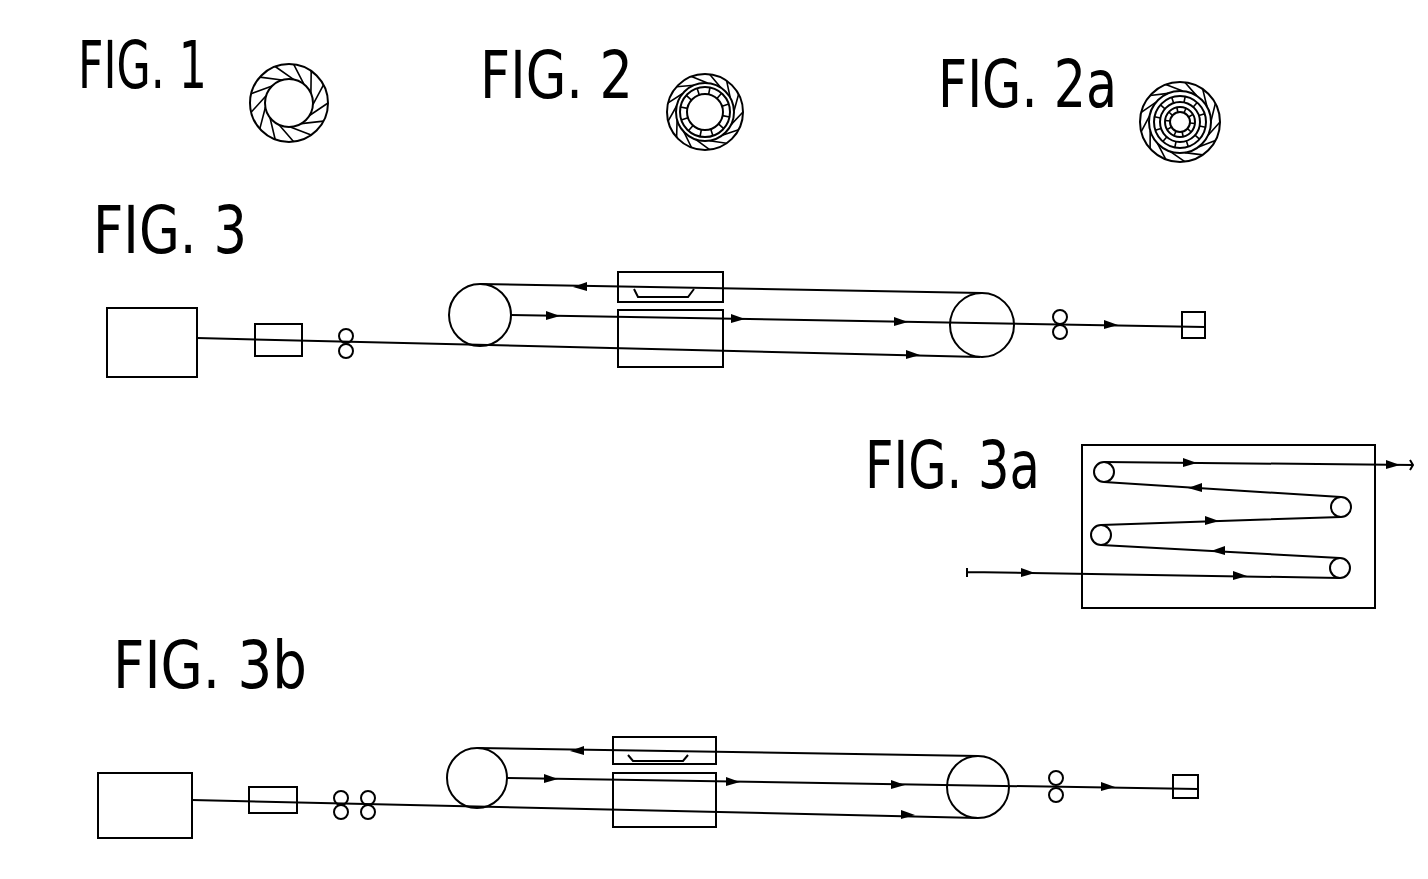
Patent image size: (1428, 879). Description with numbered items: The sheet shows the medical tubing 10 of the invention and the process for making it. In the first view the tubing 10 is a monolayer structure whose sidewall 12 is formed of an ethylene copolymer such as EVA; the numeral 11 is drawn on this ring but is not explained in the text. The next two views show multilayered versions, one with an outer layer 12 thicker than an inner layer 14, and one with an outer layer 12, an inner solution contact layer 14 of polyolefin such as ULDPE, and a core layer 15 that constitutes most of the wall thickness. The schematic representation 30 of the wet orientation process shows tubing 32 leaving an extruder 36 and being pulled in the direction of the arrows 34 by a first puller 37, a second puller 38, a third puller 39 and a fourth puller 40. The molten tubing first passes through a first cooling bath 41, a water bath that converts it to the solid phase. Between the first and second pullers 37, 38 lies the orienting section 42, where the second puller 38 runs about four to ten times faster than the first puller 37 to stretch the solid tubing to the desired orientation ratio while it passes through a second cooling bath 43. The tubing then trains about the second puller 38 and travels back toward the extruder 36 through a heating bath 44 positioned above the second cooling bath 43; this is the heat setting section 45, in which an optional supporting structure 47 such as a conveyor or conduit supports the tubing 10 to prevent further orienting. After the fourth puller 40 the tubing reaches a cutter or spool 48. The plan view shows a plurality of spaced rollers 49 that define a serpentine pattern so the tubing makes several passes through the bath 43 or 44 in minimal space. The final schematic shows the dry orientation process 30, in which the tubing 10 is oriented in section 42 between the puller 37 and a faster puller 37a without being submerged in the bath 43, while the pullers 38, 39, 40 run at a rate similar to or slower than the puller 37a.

In FIG. 1, the tubing 10 is at (333, 90).
In FIG. 2, the tubing 10 is at (762, 125).
In FIG. 2A, the tubing 10 is at (1228, 107).
In FIG. 1, the tube wall 11 is at (318, 128).
In FIG. 2, the sidewall 12 is at (672, 133).
In FIG. 2A, the sidewall 12 is at (1175, 89).
In FIG. 2, the inner layer 14 is at (723, 145).
In FIG. 2A, the inner layer 14 is at (1203, 127).
In FIG. 2A, the core layer 15 is at (1170, 108).
In FIG. 3B, the schematic representation 30 is at (616, 678).
In FIG. 3, the tubing 32 is at (213, 342).
In FIG. 3B, the tubing 32 is at (210, 803).
In FIG. 3, the arrows 34 is at (392, 340).
In FIG. 3B, the arrows 34 is at (393, 803).
In FIG. 3, the extruder 36 is at (151, 329).
In FIG. 3B, the extruder 36 is at (144, 787).
In FIG. 3, the first puller 37 is at (346, 329).
In FIG. 3B, the first puller 37 is at (340, 791).
In FIG. 3B, the puller 37a is at (369, 791).
In FIG. 3, the second puller 38 is at (984, 310).
In FIG. 3B, the second puller 38 is at (978, 770).
In FIG. 3, the third puller 39 is at (473, 300).
In FIG. 3B, the third puller 39 is at (472, 762).
In FIG. 3, the fourth puller 40 is at (1061, 310).
In FIG. 3B, the fourth puller 40 is at (1057, 771).
In FIG. 3, the first cooling bath 41 is at (275, 332).
In FIG. 3B, the first cooling bath 41 is at (263, 793).
In FIG. 3, the orienting section 42 is at (577, 354).
In FIG. 3B, the orienting section 42 is at (358, 815).
In FIG. 3, the second cooling bath 43 is at (712, 358).
In FIG. 3A, the second cooling bath 43 is at (1255, 455).
In FIG. 3B, the second cooling bath 43 is at (703, 815).
In FIG. 3, the heating bath 44 is at (690, 286).
In FIG. 3B, the heating bath 44 is at (686, 748).
In FIG. 3, the heat setting section 45 is at (745, 285).
In FIG. 3B, the heat setting section 45 is at (737, 746).
In FIG. 3, the supporting structure 47 is at (650, 295).
In FIG. 3B, the supporting structure 47 is at (647, 757).
In FIG. 3, the cutter or spool 48 is at (1189, 317).
In FIG. 3B, the cutter or spool 48 is at (1182, 779).
In FIG. 3A, the rollers 49 is at (1098, 534).